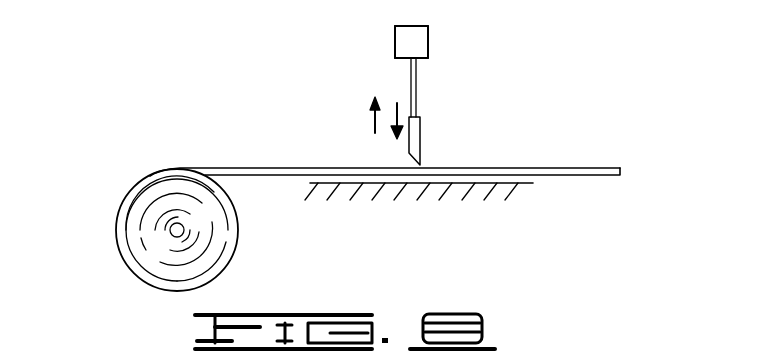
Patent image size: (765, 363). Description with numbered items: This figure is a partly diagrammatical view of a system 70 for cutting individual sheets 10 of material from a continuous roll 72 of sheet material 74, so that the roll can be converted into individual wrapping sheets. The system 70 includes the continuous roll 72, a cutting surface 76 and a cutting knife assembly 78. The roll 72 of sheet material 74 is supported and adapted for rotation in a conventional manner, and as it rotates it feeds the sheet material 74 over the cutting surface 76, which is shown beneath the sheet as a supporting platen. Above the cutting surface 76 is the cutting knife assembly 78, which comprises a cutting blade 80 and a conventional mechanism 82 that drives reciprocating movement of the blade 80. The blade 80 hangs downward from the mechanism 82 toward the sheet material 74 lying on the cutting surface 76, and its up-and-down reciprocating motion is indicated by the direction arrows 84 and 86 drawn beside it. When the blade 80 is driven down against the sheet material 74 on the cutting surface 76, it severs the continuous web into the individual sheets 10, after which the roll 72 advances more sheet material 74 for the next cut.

The sheet 10 is at (546, 160).
The system 70 is at (161, 154).
The continuous roll 72 is at (142, 233).
The sheet material 74 is at (308, 167).
The cutting surface 76 is at (457, 185).
The cutting knife assembly 78 is at (432, 41).
The cutting blade 80 is at (420, 158).
The mechanism 82 is at (395, 44).
The direction arrow 84 is at (372, 122).
The direction arrow 86 is at (395, 108).